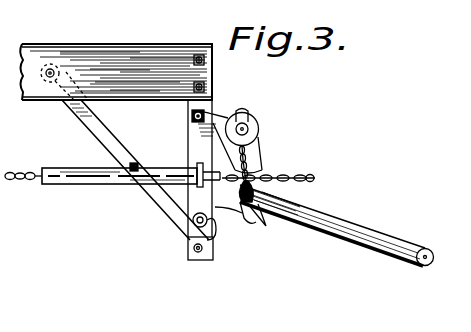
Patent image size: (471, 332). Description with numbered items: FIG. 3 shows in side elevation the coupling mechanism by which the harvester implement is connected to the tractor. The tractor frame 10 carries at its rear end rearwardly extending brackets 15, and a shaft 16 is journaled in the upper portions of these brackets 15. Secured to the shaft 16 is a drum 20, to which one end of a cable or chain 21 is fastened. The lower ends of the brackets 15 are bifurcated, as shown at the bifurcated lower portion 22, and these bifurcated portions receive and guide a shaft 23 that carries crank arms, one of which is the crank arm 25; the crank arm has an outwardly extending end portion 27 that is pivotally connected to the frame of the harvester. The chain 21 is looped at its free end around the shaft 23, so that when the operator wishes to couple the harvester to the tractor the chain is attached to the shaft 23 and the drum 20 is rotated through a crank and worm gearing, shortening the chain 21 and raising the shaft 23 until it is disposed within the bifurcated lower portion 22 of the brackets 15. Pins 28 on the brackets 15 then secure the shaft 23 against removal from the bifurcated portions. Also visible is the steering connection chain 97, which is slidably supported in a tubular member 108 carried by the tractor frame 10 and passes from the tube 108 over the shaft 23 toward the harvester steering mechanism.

The frame 10 is at (128, 44).
The brackets 15 is at (268, 177).
The shaft 16 is at (248, 127).
The drum 20 is at (250, 124).
The cable or chain 21 is at (250, 162).
The bifurcated lower portion 22 is at (250, 224).
The shaft 23 is at (236, 193).
The crank arm 25 is at (342, 236).
The outwardly extending end portion 27 is at (425, 266).
The pins 28 is at (300, 193).
The chain 97 is at (28, 182).
The tubular member 108 is at (95, 185).